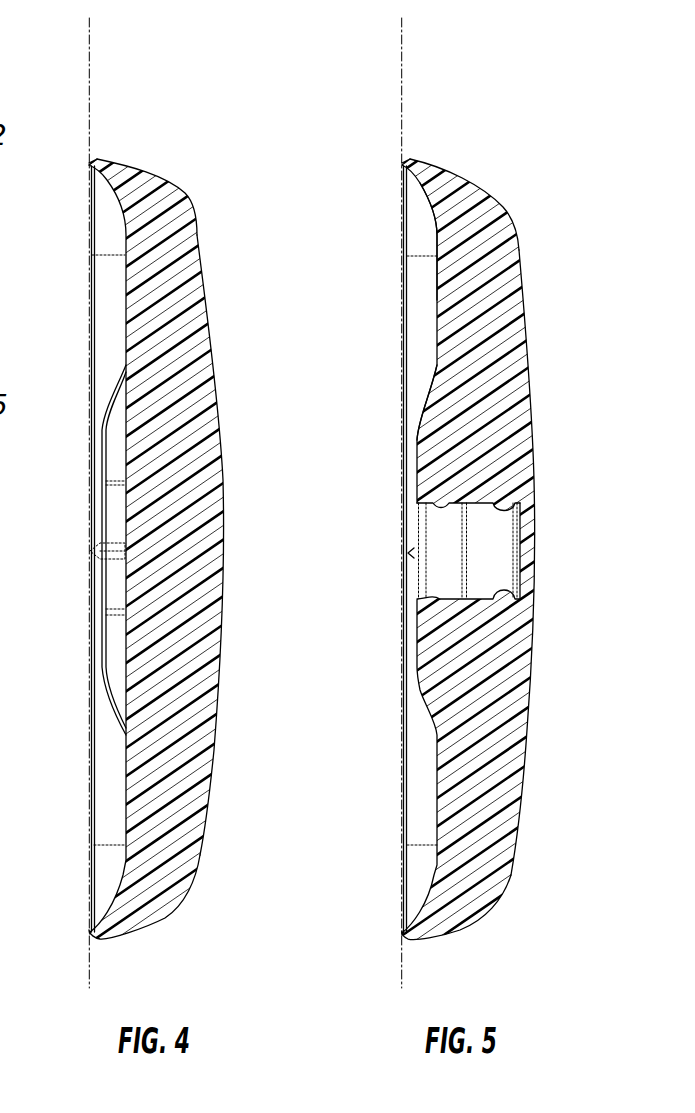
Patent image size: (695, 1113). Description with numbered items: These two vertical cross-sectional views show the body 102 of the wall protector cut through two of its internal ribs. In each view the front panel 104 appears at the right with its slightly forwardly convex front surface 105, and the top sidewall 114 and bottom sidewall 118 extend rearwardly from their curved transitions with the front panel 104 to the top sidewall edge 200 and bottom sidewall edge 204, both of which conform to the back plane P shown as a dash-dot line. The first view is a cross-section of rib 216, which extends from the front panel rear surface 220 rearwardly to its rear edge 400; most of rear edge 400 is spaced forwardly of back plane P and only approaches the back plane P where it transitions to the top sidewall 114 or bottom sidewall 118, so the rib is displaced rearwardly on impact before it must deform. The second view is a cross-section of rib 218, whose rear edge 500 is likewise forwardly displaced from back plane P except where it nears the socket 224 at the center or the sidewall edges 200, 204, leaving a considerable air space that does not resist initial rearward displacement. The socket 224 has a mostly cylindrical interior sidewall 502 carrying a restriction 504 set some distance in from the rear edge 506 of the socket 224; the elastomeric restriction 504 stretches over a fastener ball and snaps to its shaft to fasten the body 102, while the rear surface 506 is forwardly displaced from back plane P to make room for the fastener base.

In FIG. 4, the back plane P is at (90, 83).
In FIG. 5, the back plane P is at (403, 83).
In FIG. 5, the body 102 is at (467, 570).
In FIG. 4, the front panel 104 is at (218, 512).
In FIG. 5, the front panel 104 is at (528, 553).
In FIG. 4, the front surface 105 is at (222, 417).
In FIG. 5, the front surface 105 is at (527, 443).
In FIG. 4, the top sidewall 114 is at (125, 173).
In FIG. 5, the top sidewall 114 is at (448, 175).
In FIG. 4, the bottom sidewall 118 is at (157, 922).
In FIG. 5, the bottom sidewall 118 is at (470, 923).
In FIG. 4, the top sidewall edge 200 is at (88, 167).
In FIG. 5, the top sidewall edge 200 is at (403, 167).
In FIG. 4, the bottom sidewall edge 204 is at (89, 932).
In FIG. 5, the bottom sidewall edge 204 is at (402, 932).
In FIG. 4, the rib 216 is at (138, 728).
In FIG. 5, the rib 218 is at (507, 297).
In FIG. 5, the front panel rear surface 220 is at (516, 559).
In FIG. 5, the socket 224 is at (520, 508).
In FIG. 4, the rear edge 400 is at (122, 283).
In FIG. 5, the rear edge 500 is at (435, 283).
In FIG. 5, the interior sidewall 502 is at (520, 598).
In FIG. 5, the restriction 504 is at (438, 504).
In FIG. 5, the rear edge 506 is at (415, 500).